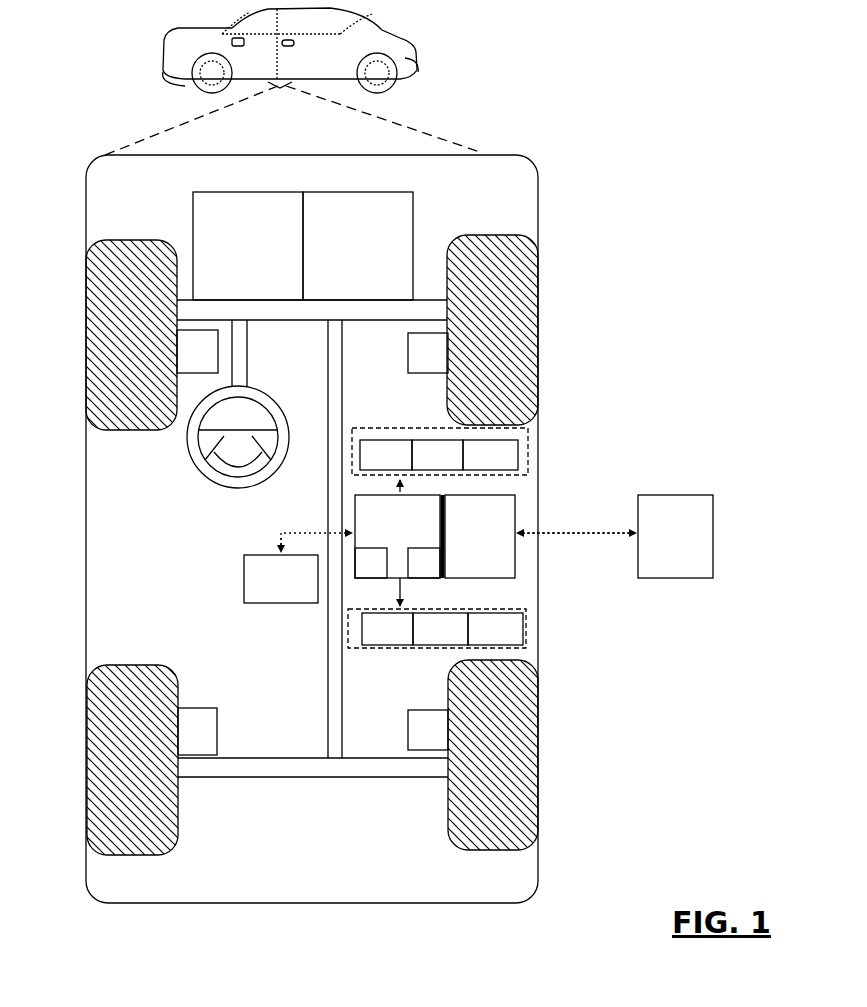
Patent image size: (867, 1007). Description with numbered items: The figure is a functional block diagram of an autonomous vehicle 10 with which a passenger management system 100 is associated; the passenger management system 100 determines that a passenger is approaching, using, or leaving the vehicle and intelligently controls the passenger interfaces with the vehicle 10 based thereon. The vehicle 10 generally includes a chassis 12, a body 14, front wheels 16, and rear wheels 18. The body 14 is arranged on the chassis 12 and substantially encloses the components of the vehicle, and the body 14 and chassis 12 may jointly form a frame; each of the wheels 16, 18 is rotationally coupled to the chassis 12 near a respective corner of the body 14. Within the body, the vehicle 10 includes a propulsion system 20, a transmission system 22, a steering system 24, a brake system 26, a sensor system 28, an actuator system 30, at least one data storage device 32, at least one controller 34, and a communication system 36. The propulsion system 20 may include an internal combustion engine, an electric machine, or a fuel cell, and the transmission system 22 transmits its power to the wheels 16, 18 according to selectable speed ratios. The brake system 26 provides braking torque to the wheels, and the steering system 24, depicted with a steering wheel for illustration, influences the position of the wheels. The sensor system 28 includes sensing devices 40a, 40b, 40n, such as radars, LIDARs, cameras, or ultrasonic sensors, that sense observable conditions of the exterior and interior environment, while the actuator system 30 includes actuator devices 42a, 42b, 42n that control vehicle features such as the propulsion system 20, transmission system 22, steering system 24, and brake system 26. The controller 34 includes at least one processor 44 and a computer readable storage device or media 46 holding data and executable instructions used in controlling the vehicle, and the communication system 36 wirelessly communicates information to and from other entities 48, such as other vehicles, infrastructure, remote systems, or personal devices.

The vehicle 10 is at (160, 68).
The passenger management system 100 is at (566, 165).
The chassis 12 is at (327, 693).
The body 14 is at (86, 515).
The front wheels 16 is at (128, 240).
The rear wheels 18 is at (150, 855).
The propulsion system 20 is at (248, 246).
The transmission system 22 is at (358, 246).
The steering system 24 is at (272, 344).
The brake system 26 is at (312, 542).
The sensor system 28 is at (364, 427).
The actuator system 30 is at (392, 649).
The data storage device 32 is at (298, 568).
The controller 34 is at (397, 536).
The communication system 36 is at (479, 536).
The sensing device 40a is at (386, 455).
The sensing device 40b is at (437, 455).
The sensing device 40n is at (490, 455).
The actuator device 42a is at (387, 629).
The actuator device 42b is at (440, 629).
The actuator device 42n is at (495, 629).
The processor 44 is at (371, 563).
The computer readable storage device or media 46 is at (424, 563).
The other entities 48 is at (615, 536).